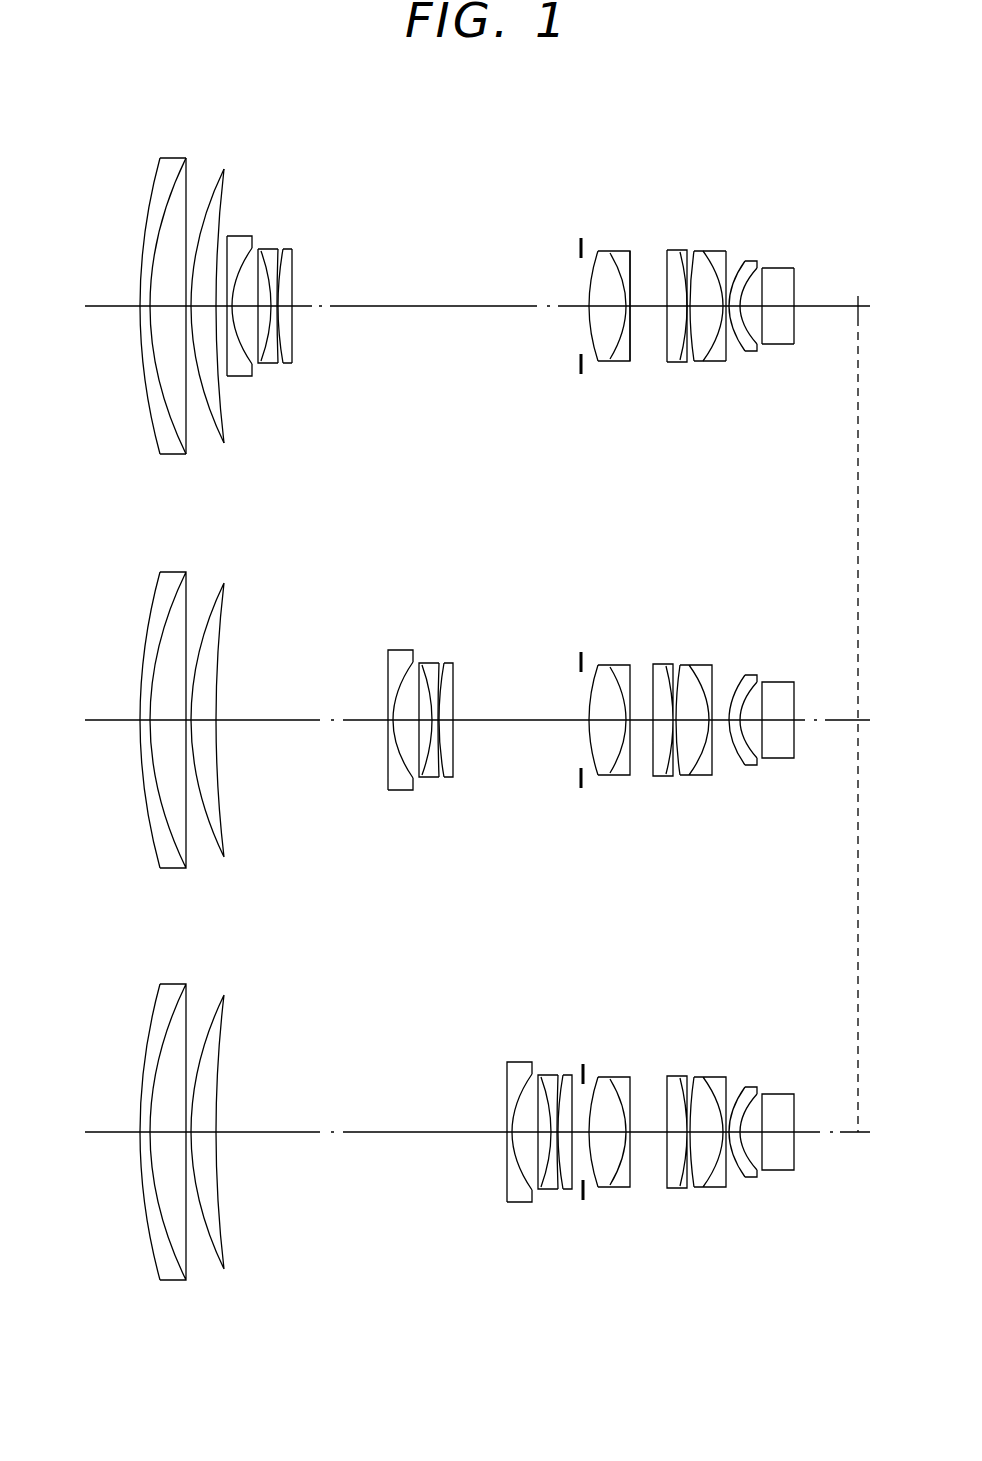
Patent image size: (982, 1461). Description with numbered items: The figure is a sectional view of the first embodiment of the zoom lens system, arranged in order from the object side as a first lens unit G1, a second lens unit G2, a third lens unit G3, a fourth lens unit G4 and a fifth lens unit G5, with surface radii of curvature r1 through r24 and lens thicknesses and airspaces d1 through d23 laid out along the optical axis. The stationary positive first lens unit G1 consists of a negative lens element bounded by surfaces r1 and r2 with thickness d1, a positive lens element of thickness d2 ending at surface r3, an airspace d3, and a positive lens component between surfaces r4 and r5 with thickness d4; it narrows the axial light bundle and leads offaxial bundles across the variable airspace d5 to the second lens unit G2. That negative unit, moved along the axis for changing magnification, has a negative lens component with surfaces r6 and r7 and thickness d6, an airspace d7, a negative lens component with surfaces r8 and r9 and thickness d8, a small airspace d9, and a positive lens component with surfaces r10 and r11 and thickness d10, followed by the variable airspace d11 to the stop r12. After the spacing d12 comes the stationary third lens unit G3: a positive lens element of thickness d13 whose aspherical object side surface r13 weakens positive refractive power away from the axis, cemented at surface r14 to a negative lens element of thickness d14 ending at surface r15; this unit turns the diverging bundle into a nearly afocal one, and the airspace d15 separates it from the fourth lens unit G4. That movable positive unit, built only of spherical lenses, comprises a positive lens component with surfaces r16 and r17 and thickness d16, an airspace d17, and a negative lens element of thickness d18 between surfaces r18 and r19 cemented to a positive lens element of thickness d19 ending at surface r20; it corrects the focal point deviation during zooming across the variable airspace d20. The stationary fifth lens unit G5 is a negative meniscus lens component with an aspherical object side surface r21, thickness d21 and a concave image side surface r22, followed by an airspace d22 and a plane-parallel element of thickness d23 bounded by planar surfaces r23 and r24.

The first surface radius of curvature r1 is at (152, 187).
The second surface radius of curvature r2 is at (166, 157).
The third surface radius of curvature r3 is at (192, 177).
The fourth surface radius of curvature r4 is at (205, 192).
The fifth surface radius of curvature r5 is at (222, 170).
The sixth surface radius of curvature r6 is at (237, 235).
The seventh surface radius of curvature r7 is at (245, 240).
The eighth surface radius of curvature r8 is at (268, 252).
The ninth surface radius of curvature r9 is at (278, 250).
The tenth surface radius of curvature r10 is at (290, 255).
The eleventh surface radius of curvature r11 is at (295, 263).
The stop r12 is at (578, 252).
The thirteenth surface radius of curvature r13 is at (593, 263).
The fourteenth surface radius of curvature r14 is at (617, 257).
The fifteenth lens surface r15 is at (632, 260).
The sixteenth surface radius of curvature r16 is at (663, 260).
The seventeenth surface radius of curvature r17 is at (687, 258).
The eighteenth surface radius of curvature r18 is at (695, 258).
The nineteenth surface radius of curvature r19 is at (702, 262).
The twentieth surface radius of curvature r20 is at (728, 264).
The twenty-first surface radius of curvature r21 is at (744, 266).
The twenty-second surface radius of curvature r22 is at (756, 267).
The twenty-third surface radius of curvature r23 is at (766, 272).
The twenty-fourth surface radius of curvature r24 is at (800, 272).
The first lens thickness d1 is at (147, 309).
The second lens thickness d2 is at (163, 300).
The third airspace d3 is at (192, 322).
The fourth lens thickness d4 is at (207, 335).
The fifth airspace d5 is at (222, 345).
The sixth lens thickness d6 is at (238, 345).
The seventh airspace d7 is at (255, 372).
The eighth lens thickness d8 is at (270, 370).
The ninth airspace d9 is at (280, 300).
The tenth lens thickness d10 is at (287, 310).
The eleventh airspace d11 is at (408, 312).
The twelfth airspace d12 is at (588, 310).
The thirteenth lens thickness d13 is at (606, 364).
The fourteenth lens thickness d14 is at (640, 335).
The axial thickness/spacing d15 is at (648, 322).
The sixteenth lens thickness d16 is at (676, 367).
The seventeenth airspace d17 is at (693, 368).
The eighteenth lens thickness d18 is at (710, 368).
The nineteenth lens thickness d19 is at (731, 362).
The twentieth airspace d20 is at (742, 352).
The twenty-first lens thickness d21 is at (758, 352).
The twenty-second airspace d22 is at (781, 348).
The twenty-third thickness d23 is at (808, 325).
The first lens unit G1 is at (242, 1297).
The second lens unit G2 is at (575, 1223).
The third lens unit G3 is at (643, 1223).
The fourth lens unit G4 is at (730, 1223).
The fifth lens unit G5 is at (770, 1223).